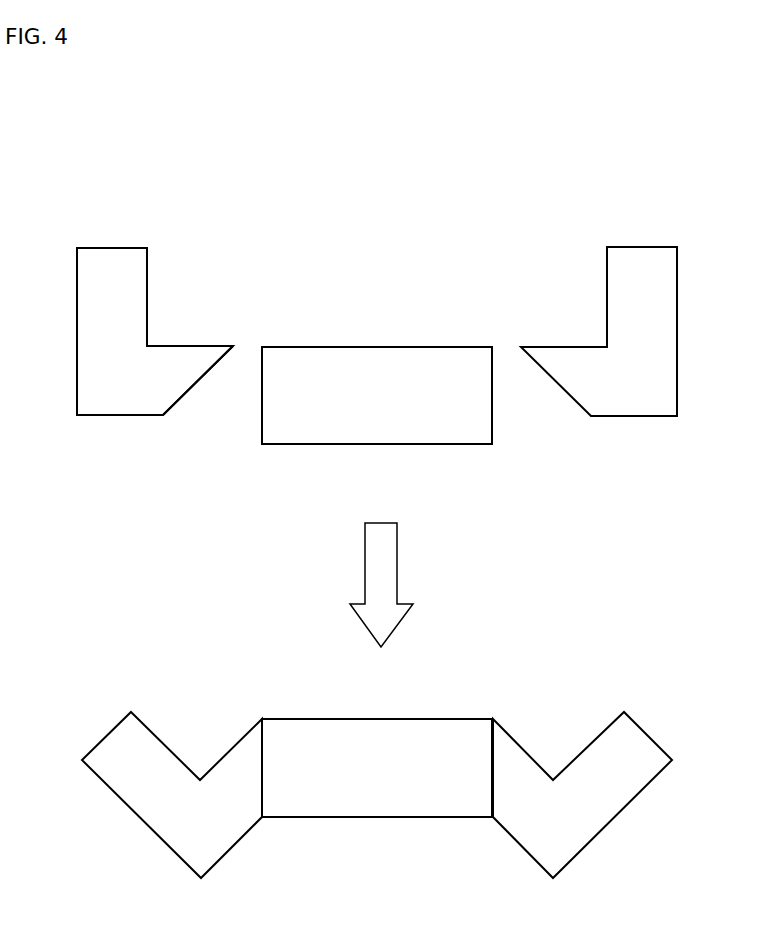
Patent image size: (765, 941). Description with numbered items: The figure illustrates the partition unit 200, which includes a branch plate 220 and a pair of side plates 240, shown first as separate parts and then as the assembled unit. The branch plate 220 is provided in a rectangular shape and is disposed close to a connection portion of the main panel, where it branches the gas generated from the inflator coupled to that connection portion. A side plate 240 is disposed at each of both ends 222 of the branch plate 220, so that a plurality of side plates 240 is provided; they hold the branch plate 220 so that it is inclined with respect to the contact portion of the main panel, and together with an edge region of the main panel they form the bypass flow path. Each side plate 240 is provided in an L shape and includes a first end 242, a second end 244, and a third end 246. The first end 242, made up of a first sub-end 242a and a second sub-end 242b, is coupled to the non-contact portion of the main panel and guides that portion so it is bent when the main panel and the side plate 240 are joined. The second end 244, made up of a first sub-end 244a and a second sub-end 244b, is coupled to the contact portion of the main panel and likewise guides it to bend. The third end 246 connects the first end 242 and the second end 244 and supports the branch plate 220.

The partition unit 200 is at (68, 117).
The branch plate 220 is at (394, 313).
The ends of the branch plate 222 is at (261, 430).
The side plate 240 is at (118, 208).
The first end 242 is at (243, 249).
The 1-1 end 242a is at (200, 345).
The 1-2 end 242b is at (148, 258).
The second end 244 is at (148, 484).
The 2-1 end 244a is at (110, 417).
The 2-2 end 244b is at (76, 388).
The third end 246 is at (186, 400).